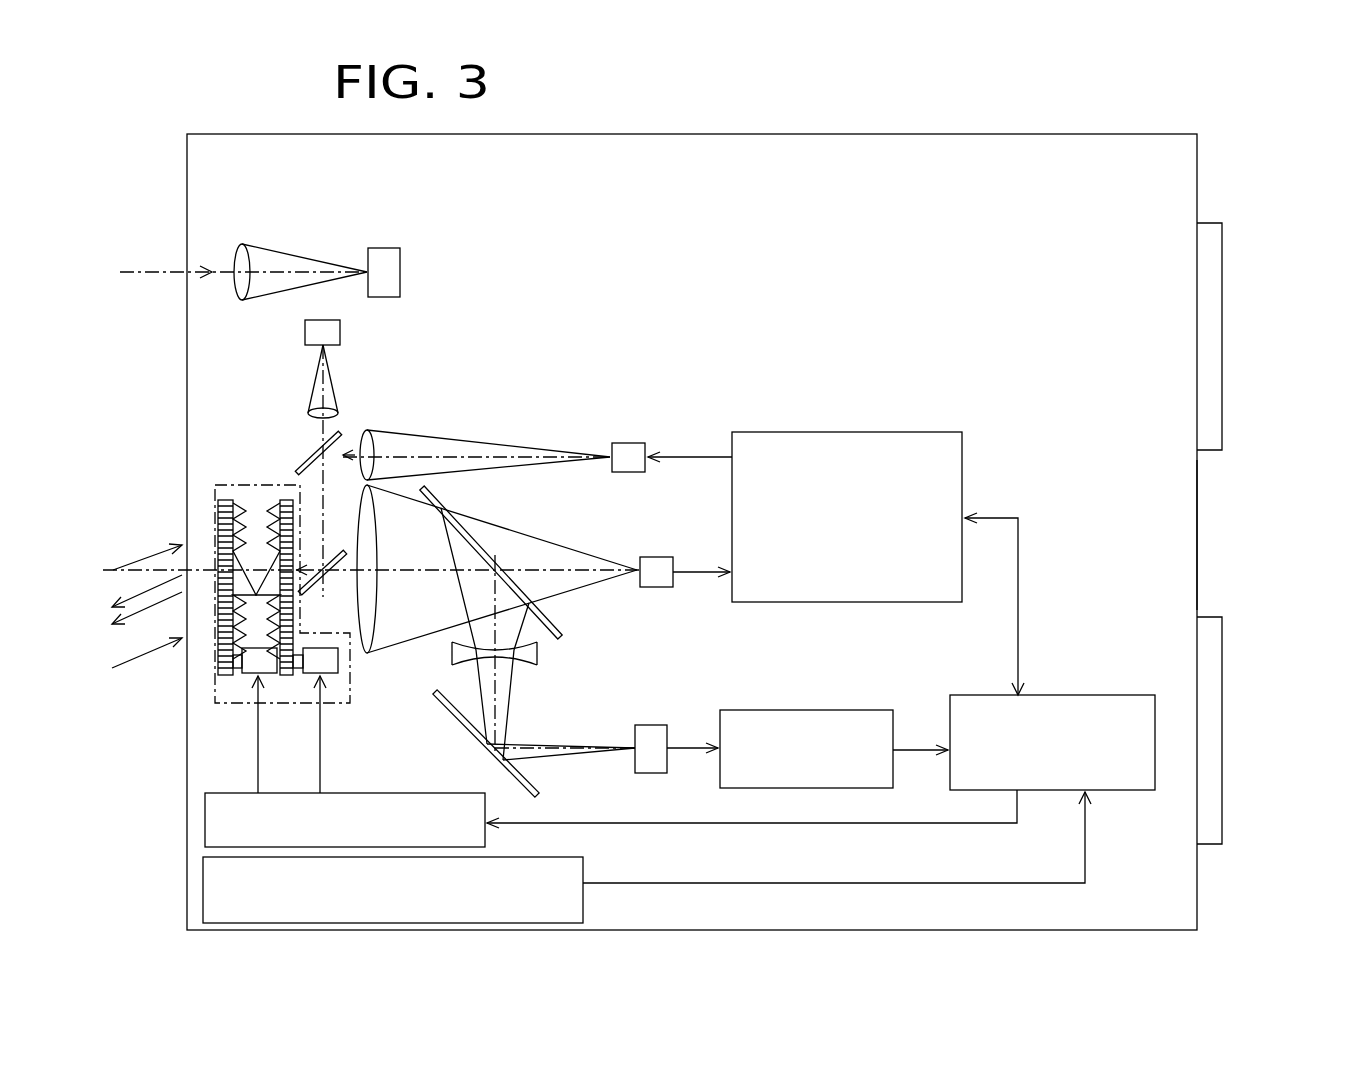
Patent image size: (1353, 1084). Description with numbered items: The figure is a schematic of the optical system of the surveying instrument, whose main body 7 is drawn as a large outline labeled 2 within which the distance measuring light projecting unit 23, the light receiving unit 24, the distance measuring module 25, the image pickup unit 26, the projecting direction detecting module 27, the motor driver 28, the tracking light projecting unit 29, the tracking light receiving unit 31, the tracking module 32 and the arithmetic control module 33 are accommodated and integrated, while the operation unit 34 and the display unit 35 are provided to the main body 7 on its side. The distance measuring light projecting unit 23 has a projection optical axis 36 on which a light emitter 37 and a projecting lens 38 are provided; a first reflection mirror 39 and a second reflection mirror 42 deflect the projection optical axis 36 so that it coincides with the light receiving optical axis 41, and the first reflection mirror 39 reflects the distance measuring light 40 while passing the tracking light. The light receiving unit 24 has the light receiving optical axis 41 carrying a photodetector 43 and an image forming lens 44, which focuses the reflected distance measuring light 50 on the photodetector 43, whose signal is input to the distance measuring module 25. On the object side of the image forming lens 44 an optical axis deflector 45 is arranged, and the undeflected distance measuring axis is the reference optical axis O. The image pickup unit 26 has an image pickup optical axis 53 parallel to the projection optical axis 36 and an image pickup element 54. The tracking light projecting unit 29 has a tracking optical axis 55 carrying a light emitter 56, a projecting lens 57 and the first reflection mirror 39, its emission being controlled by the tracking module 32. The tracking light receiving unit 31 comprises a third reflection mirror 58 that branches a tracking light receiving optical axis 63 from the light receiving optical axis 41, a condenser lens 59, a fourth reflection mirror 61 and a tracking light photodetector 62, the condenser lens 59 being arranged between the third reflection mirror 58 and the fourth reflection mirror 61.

The surveying instrument main body 2 is at (626, 126).
The surveying instrument main body 7 is at (1200, 540).
The distance measuring light projecting unit 23 is at (535, 432).
The light receiving unit 24 is at (608, 598).
The distance measuring module 25 is at (838, 432).
The image pickup unit 26 is at (325, 245).
The projecting direction detecting module 27 is at (517, 857).
The motor driver 28 is at (345, 793).
The tracking light projecting unit 29 is at (300, 360).
The tracking light receiving unit 31 is at (617, 718).
The tracking module 32 is at (855, 710).
The arithmetic control module 33 is at (1125, 695).
The operation unit 34 is at (1224, 338).
The display unit 35 is at (1224, 720).
The projection optical axis 36 is at (463, 455).
The light emitter 37 is at (628, 443).
The projecting lens 38 is at (372, 440).
The first reflection mirror 39 is at (312, 458).
The distance measuring light 40 is at (147, 593).
The light receiving optical axis 41 is at (575, 570).
The second reflection mirror 42 is at (350, 556).
The photodetector 43 is at (657, 557).
The image forming lens 44 is at (375, 603).
The optical axis deflector 45 is at (252, 485).
The reflected distance measuring light 50 is at (142, 656).
The image pickup optical axis 53 is at (265, 265).
The image pickup element 54 is at (385, 248).
The tracking optical axis 55 is at (328, 395).
The light emitter 56 is at (342, 330).
The projecting lens 57 is at (312, 405).
The third reflection mirror 58 is at (485, 545).
The condenser lens 59 is at (540, 655).
The fourth reflection mirror 61 is at (455, 716).
The tracking light photodetector 62 is at (655, 725).
The tracking light receiving optical axis 63 is at (570, 752).
The reference optical axis O is at (197, 567).